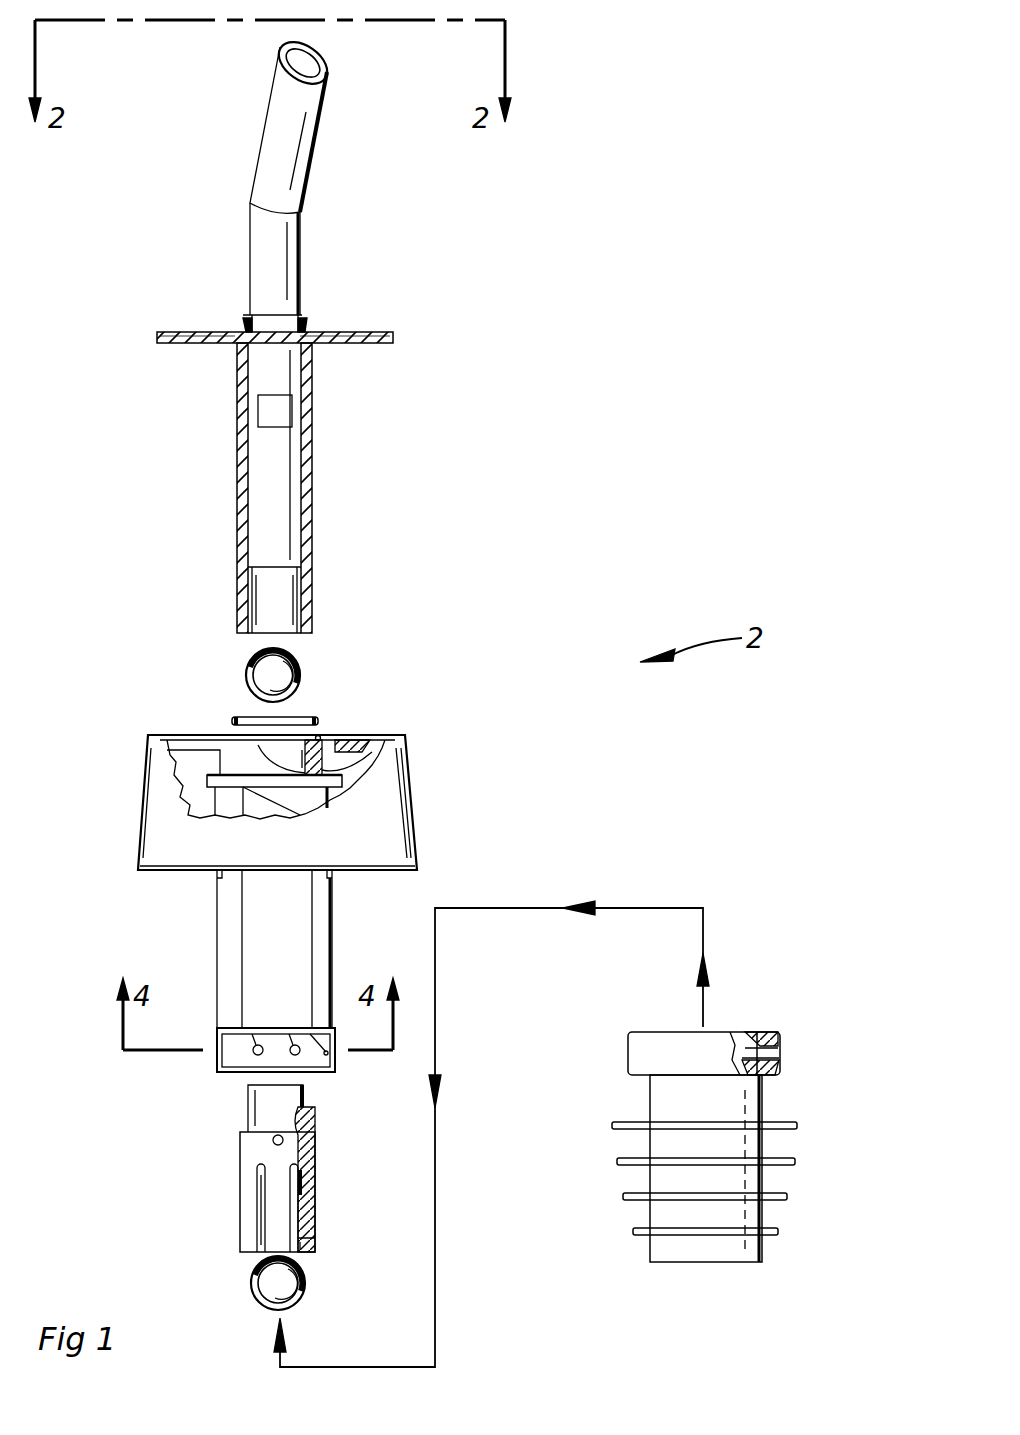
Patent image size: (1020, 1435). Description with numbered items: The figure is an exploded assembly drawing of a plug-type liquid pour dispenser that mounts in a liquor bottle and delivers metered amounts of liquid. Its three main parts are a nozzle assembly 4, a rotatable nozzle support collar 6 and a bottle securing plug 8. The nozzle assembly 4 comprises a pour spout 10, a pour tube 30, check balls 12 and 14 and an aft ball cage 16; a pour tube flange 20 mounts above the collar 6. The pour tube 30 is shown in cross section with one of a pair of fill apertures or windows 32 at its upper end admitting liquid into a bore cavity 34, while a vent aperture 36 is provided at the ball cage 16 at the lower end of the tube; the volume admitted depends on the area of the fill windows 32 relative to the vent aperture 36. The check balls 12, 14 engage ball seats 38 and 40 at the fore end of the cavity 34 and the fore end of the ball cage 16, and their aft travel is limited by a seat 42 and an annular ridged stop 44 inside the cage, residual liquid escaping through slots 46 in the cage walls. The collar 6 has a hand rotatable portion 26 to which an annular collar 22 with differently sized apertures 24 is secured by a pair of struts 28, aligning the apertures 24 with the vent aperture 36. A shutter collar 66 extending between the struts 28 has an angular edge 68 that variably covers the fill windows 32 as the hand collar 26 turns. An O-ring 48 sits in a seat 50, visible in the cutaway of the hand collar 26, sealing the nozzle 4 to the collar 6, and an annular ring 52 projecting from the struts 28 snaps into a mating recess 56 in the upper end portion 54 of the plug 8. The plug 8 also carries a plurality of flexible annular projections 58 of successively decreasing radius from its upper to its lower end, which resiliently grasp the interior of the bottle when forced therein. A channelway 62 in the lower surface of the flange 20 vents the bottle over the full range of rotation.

The nozzle assembly 4 is at (316, 248).
The rotatable nozzle support collar 6 is at (280, 789).
The bottle securing plug 8 is at (752, 1133).
The pour spout 10 is at (322, 145).
The check ball 12 is at (263, 663).
The check ball 14 is at (270, 1270).
The aft ball cage 16 is at (240, 1178).
The pour tube flange 20 is at (378, 332).
The annular collar 22 is at (217, 1063).
The apertures 24 is at (222, 1035).
The hand rotatable portion 26 is at (138, 838).
The struts 28 is at (217, 942).
The pour tube 30 is at (312, 505).
The fill apertures or windows 32 is at (282, 423).
The bore cavity 34 is at (282, 491).
The vent aperture 36 is at (273, 1140).
The ball seat 38 is at (302, 332).
The ball seat 40 is at (315, 1152).
The seat 42 is at (304, 1082).
The annular ridged projection or stop 44 is at (303, 1240).
The slots 46 is at (296, 1200).
The O-ring 48 is at (232, 719).
The seat 50 is at (320, 737).
The annular ring 52 is at (340, 779).
The upper end portion of plug 54 is at (662, 1032).
The mating recess 56 is at (757, 1044).
The sealing fins 58 is at (778, 1232).
The channelway 62 is at (225, 344).
The shutter collar 66 is at (305, 800).
The angular edge 68 is at (256, 796).